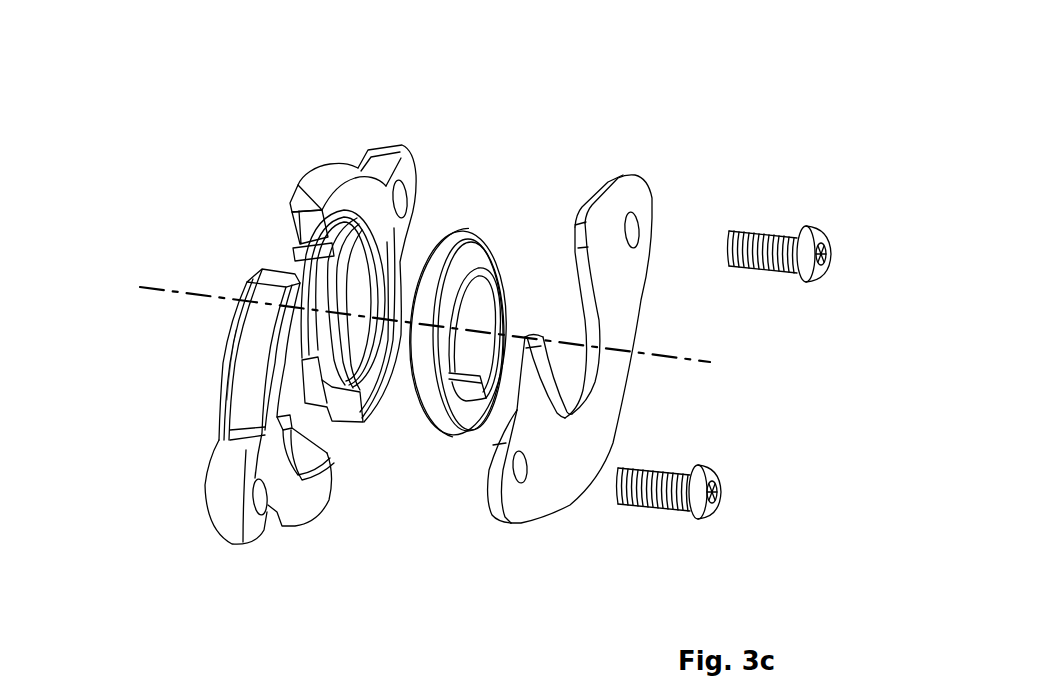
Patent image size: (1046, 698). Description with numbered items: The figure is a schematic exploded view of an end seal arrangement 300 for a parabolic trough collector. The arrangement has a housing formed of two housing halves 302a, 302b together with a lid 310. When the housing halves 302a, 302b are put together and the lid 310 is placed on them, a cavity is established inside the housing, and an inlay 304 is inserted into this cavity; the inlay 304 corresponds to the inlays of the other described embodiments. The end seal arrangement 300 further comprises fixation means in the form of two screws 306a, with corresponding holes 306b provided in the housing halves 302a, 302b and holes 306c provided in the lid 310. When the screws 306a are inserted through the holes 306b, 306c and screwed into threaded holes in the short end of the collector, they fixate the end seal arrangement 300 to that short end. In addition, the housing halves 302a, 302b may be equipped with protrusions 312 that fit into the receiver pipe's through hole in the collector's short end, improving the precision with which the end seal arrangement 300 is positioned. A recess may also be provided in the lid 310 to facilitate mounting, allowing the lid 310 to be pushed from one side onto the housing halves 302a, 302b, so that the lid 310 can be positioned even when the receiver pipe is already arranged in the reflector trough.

The end seal arrangement 300 is at (707, 57).
The housing half 302a is at (342, 167).
The housing half 302b is at (220, 483).
The inlay 304 is at (470, 236).
The screws 306a is at (782, 263).
The holes 306b is at (407, 200).
The holes 306c is at (640, 224).
The lid 310 is at (570, 349).
The protrusions 312 is at (232, 365).